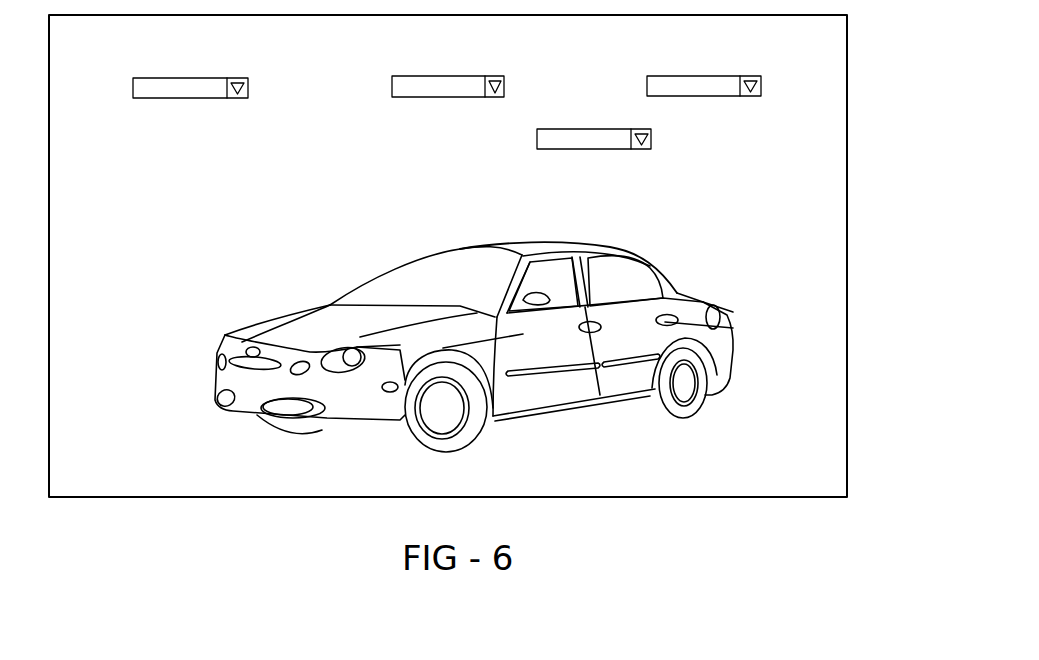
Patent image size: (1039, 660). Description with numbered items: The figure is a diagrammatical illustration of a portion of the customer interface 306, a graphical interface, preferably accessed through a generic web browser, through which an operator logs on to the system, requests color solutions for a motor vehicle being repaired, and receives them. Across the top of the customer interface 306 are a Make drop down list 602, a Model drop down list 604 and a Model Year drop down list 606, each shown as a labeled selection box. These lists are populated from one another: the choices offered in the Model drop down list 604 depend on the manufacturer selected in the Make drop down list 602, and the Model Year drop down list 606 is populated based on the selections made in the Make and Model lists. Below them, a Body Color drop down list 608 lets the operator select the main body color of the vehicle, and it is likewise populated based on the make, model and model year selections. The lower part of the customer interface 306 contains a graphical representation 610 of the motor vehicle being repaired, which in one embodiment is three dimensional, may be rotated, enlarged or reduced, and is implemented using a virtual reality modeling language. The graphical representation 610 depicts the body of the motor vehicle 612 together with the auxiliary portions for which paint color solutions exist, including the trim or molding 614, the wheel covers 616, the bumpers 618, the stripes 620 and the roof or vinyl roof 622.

The customer interface 306 is at (847, 255).
The Make drop down list 602 is at (248, 88).
The Model drop down list 604 is at (504, 87).
The Model Year drop down list 606 is at (703, 76).
The Body Color drop down list 608 is at (651, 139).
The graphical representation 610 is at (474, 234).
The body of the motor vehicle 612 is at (565, 353).
The trim or molding 614 is at (570, 363).
The wheel covers 616 is at (447, 423).
The bumpers 618 is at (215, 372).
The stripes 620 is at (462, 308).
The roofs or vinyl roofs 622 is at (522, 248).